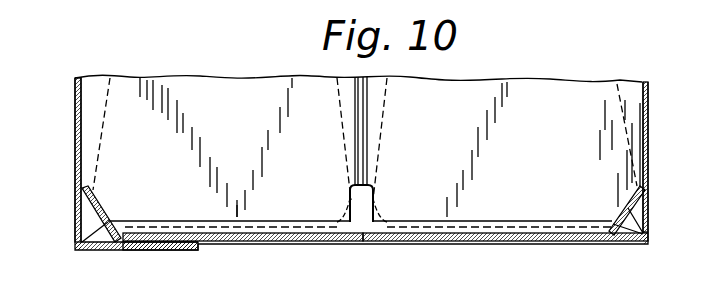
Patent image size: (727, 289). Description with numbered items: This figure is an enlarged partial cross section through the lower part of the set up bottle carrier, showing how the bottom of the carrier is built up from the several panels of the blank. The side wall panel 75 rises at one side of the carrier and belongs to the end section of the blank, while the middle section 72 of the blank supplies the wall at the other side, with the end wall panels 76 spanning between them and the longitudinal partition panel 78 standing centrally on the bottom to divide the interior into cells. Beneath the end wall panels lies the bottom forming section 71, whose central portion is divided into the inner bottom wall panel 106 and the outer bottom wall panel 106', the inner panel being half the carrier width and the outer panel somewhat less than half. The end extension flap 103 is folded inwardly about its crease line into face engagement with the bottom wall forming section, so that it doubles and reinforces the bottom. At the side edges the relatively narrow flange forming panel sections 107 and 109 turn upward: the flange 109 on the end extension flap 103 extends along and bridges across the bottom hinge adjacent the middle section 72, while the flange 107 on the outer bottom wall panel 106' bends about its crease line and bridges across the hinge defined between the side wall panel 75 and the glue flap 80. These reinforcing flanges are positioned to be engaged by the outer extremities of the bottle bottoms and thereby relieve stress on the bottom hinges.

The middle section 72 is at (649, 150).
The side wall panel 75 is at (75, 158).
The end wall panel 76 is at (211, 83).
The longitudinal partition panel 78 is at (362, 124).
The bottom forming section 71 is at (200, 231).
The glue flap 80 is at (172, 250).
The inner bottom wall panel 106 is at (243, 255).
The outer bottom wall panel 106' is at (505, 255).
The end extension flap 103 is at (510, 231).
The flange forming panel section 107 is at (97, 199).
The flange forming panel section 109 is at (623, 203).